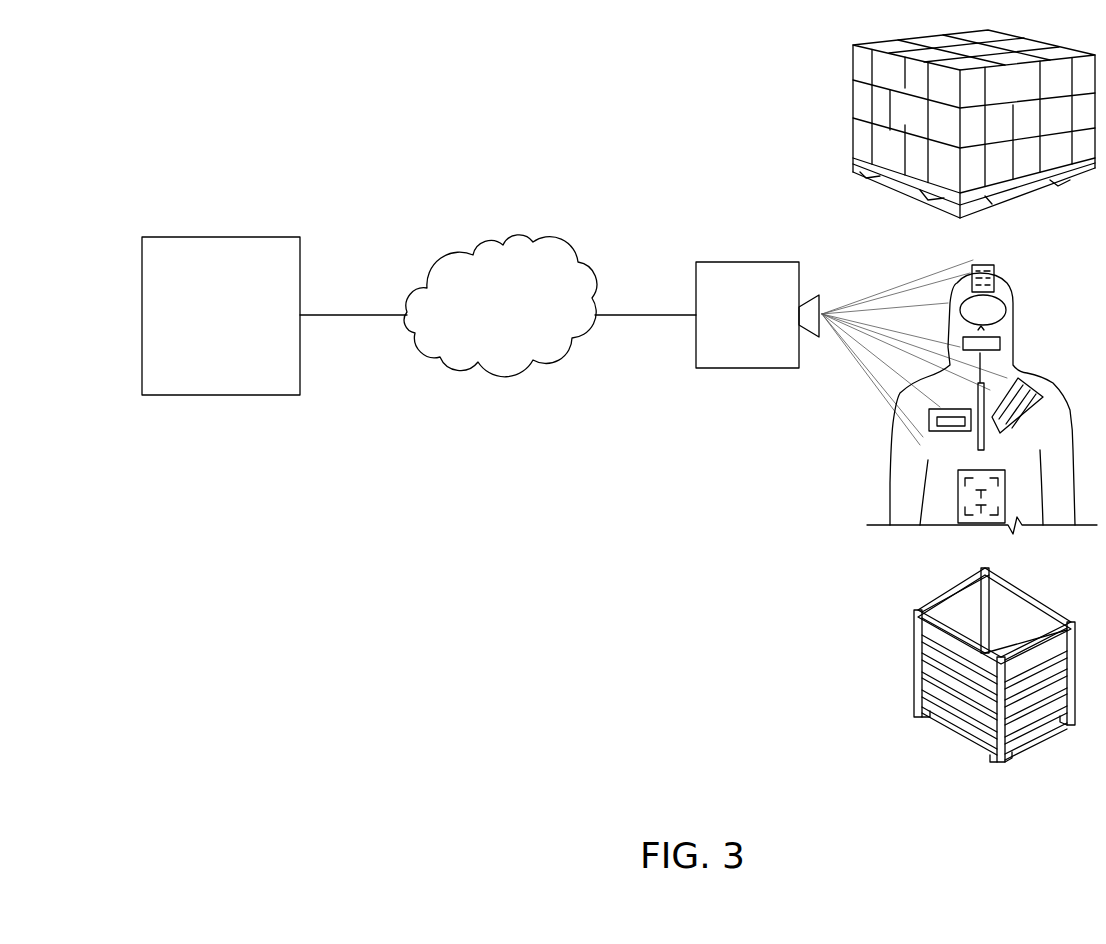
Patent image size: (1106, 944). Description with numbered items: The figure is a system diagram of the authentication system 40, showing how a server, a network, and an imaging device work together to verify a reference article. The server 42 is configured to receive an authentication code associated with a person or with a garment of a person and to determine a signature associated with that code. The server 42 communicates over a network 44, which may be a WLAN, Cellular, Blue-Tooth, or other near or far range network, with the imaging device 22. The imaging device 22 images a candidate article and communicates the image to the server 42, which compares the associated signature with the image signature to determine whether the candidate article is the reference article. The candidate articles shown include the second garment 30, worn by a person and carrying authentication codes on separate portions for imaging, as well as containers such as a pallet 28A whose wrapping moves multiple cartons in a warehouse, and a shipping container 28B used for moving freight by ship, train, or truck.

The system 40 is at (262, 115).
The server 42 is at (220, 237).
The network 44 is at (487, 233).
The imaging device 22 is at (748, 262).
The pallet 28A is at (853, 100).
The shipping container 28B is at (915, 665).
The second garment 30 is at (903, 478).